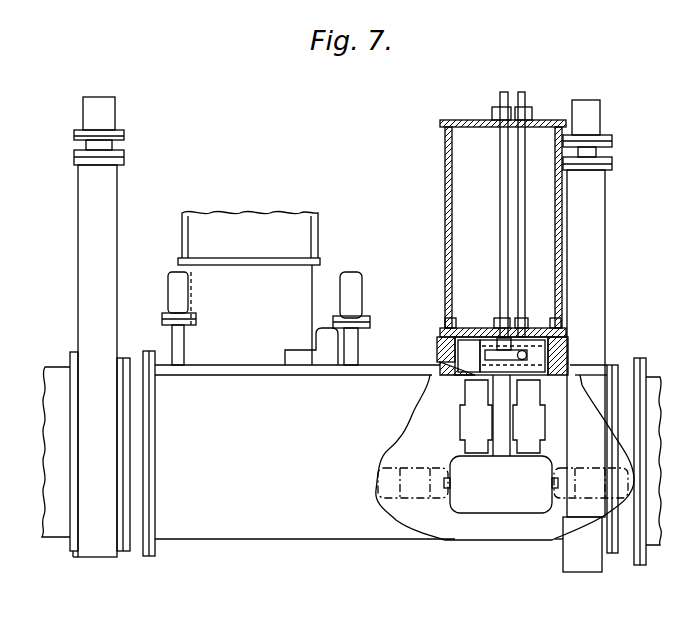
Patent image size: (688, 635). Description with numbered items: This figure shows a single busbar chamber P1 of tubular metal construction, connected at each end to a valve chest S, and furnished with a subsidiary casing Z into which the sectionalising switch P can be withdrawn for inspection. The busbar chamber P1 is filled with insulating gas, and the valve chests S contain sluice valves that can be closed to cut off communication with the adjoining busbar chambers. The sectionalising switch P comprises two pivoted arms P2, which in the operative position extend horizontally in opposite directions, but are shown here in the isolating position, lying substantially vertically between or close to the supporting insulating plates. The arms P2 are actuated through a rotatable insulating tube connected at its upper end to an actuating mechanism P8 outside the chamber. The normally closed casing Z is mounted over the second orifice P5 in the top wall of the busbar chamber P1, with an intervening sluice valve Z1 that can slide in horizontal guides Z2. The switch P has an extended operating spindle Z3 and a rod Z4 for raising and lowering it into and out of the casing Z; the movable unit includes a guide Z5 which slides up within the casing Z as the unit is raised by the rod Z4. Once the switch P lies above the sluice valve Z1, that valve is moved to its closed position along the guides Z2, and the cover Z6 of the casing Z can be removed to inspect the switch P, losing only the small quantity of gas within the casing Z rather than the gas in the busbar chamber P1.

The valve chest S is at (92, 184).
The casing Z is at (445, 160).
The sluice valve Z1 is at (458, 333).
The horizontal guides Z2 is at (445, 345).
The extended operating spindle Z3 is at (500, 105).
The rod Z4 is at (525, 105).
The guide Z5 is at (486, 330).
The cover Z6 is at (450, 120).
The sectionalising switch P is at (522, 496).
The busbar chamber P1 is at (480, 520).
The pivoted arms P2 is at (475, 421).
The second orifice P5 is at (472, 378).
The actuating mechanism P8 is at (522, 336).